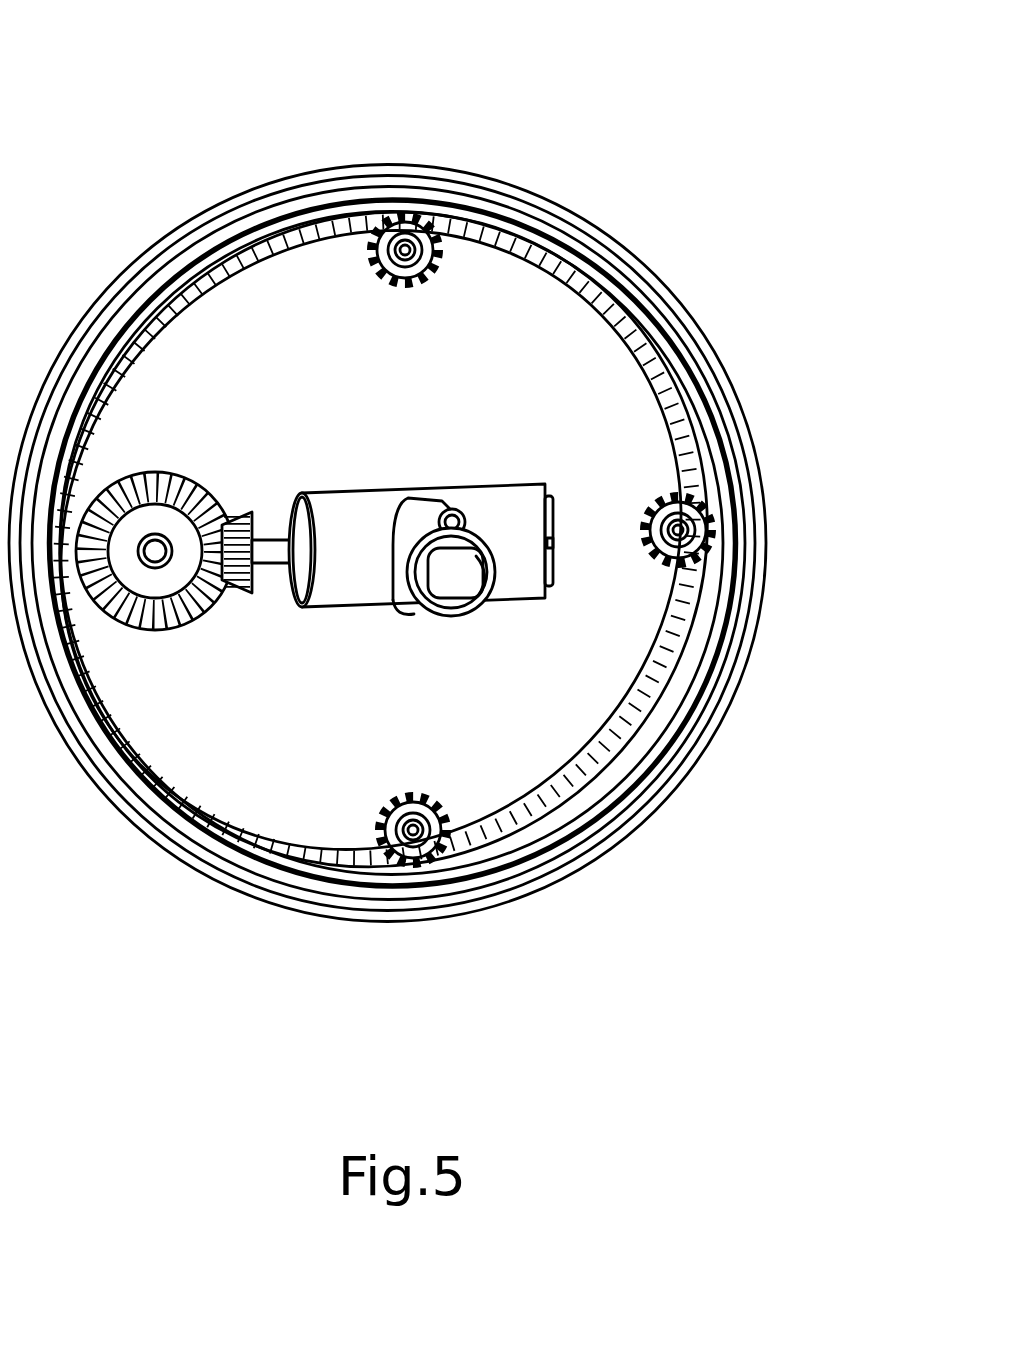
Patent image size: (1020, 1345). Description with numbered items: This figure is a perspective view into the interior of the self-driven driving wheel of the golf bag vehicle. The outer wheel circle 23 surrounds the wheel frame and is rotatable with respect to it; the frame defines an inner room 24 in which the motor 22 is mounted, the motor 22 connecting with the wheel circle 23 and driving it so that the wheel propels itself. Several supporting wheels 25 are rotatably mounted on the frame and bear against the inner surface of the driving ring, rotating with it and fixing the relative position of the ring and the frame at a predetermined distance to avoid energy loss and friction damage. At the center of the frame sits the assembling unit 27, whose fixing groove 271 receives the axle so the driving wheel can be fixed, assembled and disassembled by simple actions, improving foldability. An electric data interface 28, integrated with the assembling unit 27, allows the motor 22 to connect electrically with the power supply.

The motor 22 is at (492, 518).
The wheel circle 23 is at (757, 553).
The inner room 24 is at (267, 340).
The supporting wheel 25 is at (405, 250).
The assembling unit 27 is at (355, 650).
The electric data interface 28 is at (452, 522).
The fixing groove 271 is at (453, 573).